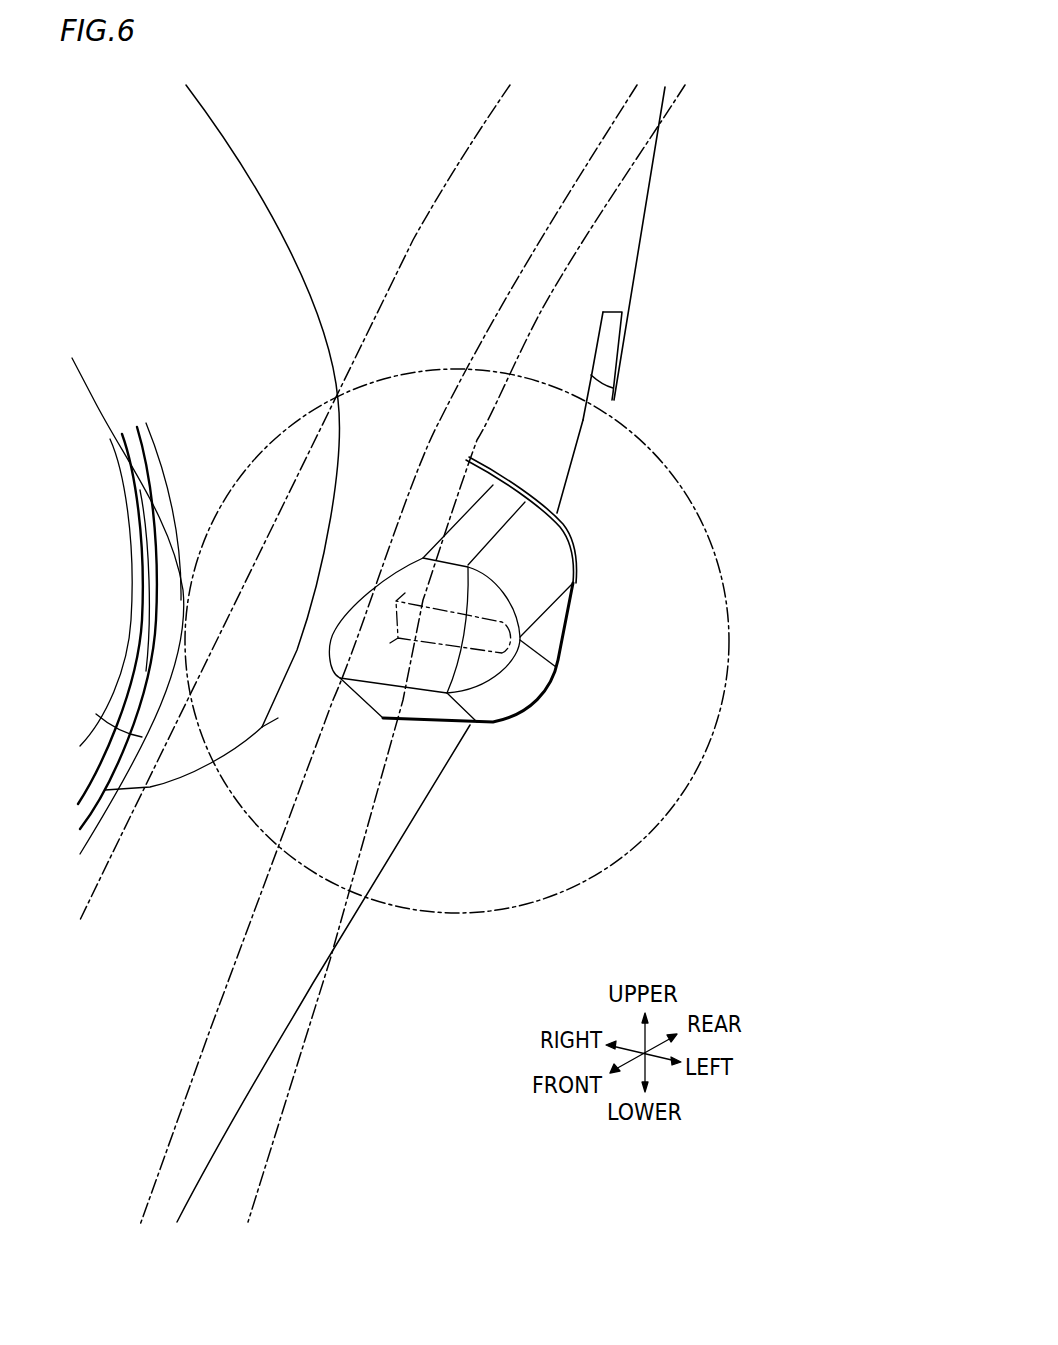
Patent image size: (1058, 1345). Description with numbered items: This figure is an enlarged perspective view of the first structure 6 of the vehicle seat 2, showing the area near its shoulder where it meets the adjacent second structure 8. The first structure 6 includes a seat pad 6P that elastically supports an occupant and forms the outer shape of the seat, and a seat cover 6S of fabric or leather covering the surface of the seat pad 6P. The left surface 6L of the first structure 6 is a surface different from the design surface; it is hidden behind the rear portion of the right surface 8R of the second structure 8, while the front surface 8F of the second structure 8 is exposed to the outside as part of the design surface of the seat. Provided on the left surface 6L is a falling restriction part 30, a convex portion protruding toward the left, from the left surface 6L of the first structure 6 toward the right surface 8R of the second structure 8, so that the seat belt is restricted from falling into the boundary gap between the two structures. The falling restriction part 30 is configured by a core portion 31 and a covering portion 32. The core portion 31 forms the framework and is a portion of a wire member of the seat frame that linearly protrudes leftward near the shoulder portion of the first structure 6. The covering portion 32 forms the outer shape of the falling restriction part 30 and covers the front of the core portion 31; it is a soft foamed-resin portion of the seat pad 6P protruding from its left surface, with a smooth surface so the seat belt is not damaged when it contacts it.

The vehicle seat 2 is at (431, 502).
The second structure 8 is at (418, 219).
The front surface of the second structure 8F is at (658, 758).
The right surface of the second structure 8R is at (333, 827).
The first structure 6 is at (670, 250).
The seat cover 6S is at (572, 348).
The left surface of the first structure 6L is at (530, 446).
The seat pad 6P is at (571, 520).
The covering portion 32 is at (538, 567).
The falling restriction part 30 is at (577, 633).
The core portion 31 is at (487, 643).